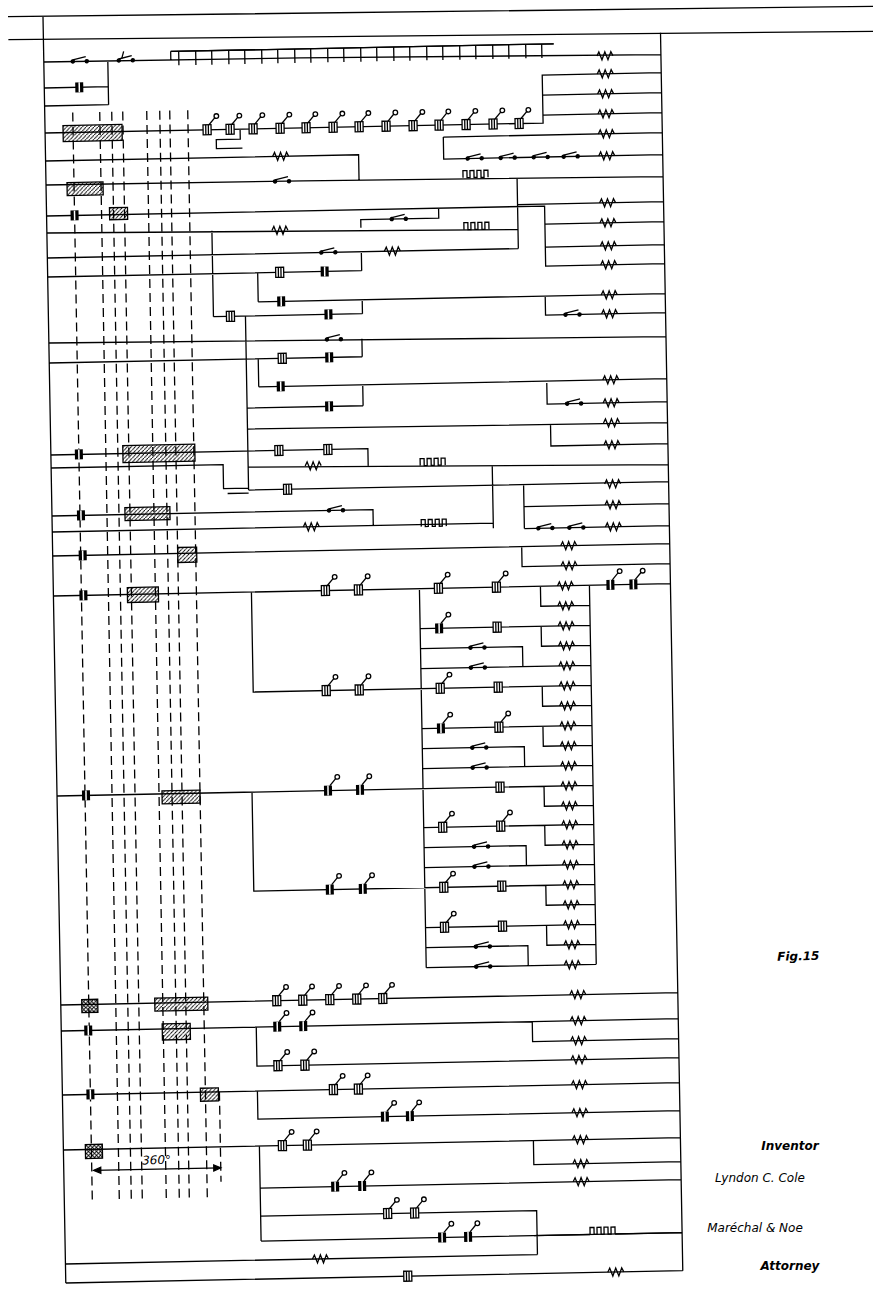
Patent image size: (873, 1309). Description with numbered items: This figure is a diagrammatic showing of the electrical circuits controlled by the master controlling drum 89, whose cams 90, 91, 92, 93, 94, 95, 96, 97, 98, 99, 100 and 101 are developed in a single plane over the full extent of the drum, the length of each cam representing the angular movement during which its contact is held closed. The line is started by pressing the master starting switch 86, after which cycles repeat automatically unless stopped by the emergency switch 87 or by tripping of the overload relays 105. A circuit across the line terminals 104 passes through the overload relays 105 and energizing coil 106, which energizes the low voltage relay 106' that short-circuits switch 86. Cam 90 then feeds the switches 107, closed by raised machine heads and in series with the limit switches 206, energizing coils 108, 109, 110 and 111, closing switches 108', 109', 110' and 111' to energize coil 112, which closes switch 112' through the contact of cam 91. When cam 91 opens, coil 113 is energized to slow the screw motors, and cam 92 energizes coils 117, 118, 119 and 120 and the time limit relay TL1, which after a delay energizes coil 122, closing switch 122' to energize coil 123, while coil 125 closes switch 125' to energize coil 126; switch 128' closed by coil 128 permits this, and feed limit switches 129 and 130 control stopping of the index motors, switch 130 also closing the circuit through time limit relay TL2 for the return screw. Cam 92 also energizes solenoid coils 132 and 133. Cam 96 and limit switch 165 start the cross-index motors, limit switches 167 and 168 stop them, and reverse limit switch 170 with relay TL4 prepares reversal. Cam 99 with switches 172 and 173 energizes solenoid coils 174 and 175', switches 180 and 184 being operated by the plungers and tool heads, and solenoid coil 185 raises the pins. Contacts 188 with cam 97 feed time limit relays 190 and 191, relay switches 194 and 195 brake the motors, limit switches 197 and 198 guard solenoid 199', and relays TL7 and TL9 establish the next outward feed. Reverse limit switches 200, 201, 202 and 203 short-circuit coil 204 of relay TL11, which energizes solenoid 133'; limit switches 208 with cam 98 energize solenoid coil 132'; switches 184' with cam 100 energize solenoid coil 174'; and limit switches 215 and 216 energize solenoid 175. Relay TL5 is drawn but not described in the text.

The master starting switch 86 is at (68, 53).
The emergency switch 87 is at (134, 55).
The master controlling drum 89 is at (142, 699).
The cam 90 is at (93, 125).
The cam 91 is at (85, 181).
The cam 92 is at (106, 206).
The cam 93 is at (134, 445).
The cam 94 is at (124, 506).
The cam 95 is at (138, 548).
The cam 96 is at (119, 587).
The cam 97 is at (141, 789).
The cam 98 is at (144, 997).
The cam 99 is at (142, 1026).
The cam 100 is at (199, 1091).
The cam 101 is at (82, 1145).
The line terminals 104 is at (43, 30).
The overload relays 105 is at (361, 40).
The energizing coil 106 is at (621, 48).
The low voltage relay 106' is at (89, 81).
The switches 107 is at (527, 119).
The coil 108 is at (621, 66).
The switch 108' is at (467, 150).
The coil 109 is at (485, 208).
The switch 109' is at (510, 149).
The coil 110 is at (622, 106).
The switch 110' is at (543, 149).
The coil 111 is at (622, 126).
The switch 111' is at (573, 148).
The coil 112 is at (622, 148).
The switch 112' is at (293, 173).
The coil 113 is at (284, 159).
The coil 117 is at (612, 212).
The coil 118 is at (612, 232).
The coil 119 is at (612, 255).
The coil 120 is at (612, 274).
The coil 122 is at (625, 287).
The switch 122' is at (565, 306).
The coil 123 is at (612, 323).
The coil 125 is at (626, 372).
The switch 125' is at (568, 395).
The coil 126 is at (612, 412).
The coil 128 is at (405, 257).
The switch 128' is at (337, 360).
The feed limit switch 129 is at (275, 271).
The feed limit switch 130 is at (279, 358).
The solenoid coil 132 is at (627, 415).
The solenoid coil 132' is at (602, 989).
The solenoid coil 133 is at (628, 437).
The solenoid 133' is at (630, 1262).
The limit switch 165 is at (626, 601).
The limit switch 167 is at (446, 579).
The limit switch 168 is at (436, 683).
The reverse limit switch 170 is at (447, 619).
The reverse limit switch 172 is at (273, 1021).
The reverse limit switch 173 is at (324, 1020).
The solenoid coil 174 is at (601, 1017).
The solenoid coil 174' is at (604, 1079).
The solenoid 175 is at (601, 1037).
The solenoid coil 175' is at (604, 1055).
The switches 180 is at (346, 631).
The switches 184 is at (395, 1111).
The limit switches 184' is at (343, 1084).
The solenoid coil 185 is at (568, 1121).
The contacts 188 is at (348, 781).
The time limit relay 190 is at (484, 829).
The time limit relay 191 is at (516, 922).
The relay switch 194 is at (426, 829).
The relay switch 195 is at (428, 929).
The limit switch 197 is at (277, 1138).
The limit switch 198 is at (307, 1138).
The solenoid coil 199' is at (605, 1136).
The reverse limit switch 200 is at (335, 1178).
The reverse limit switch 201 is at (381, 1178).
The reverse limit switch 202 is at (439, 1232).
The reverse limit switch 203 is at (488, 1231).
The time limit relay coil 204 is at (332, 1253).
The limit switches 206 is at (237, 118).
The limit switches 208 is at (383, 984).
The limit switch 215 is at (257, 1064).
The limit switch 216 is at (284, 1064).
The time limit relay TL1 is at (228, 314).
The time limit relay TL2 is at (285, 482).
The limit relay TL4 is at (504, 619).
The time limit relay contact TL5 is at (492, 691).
The time relay TL7 is at (492, 791).
The time relay TL9 is at (492, 890).
The time limit relay TL11 is at (422, 1271).